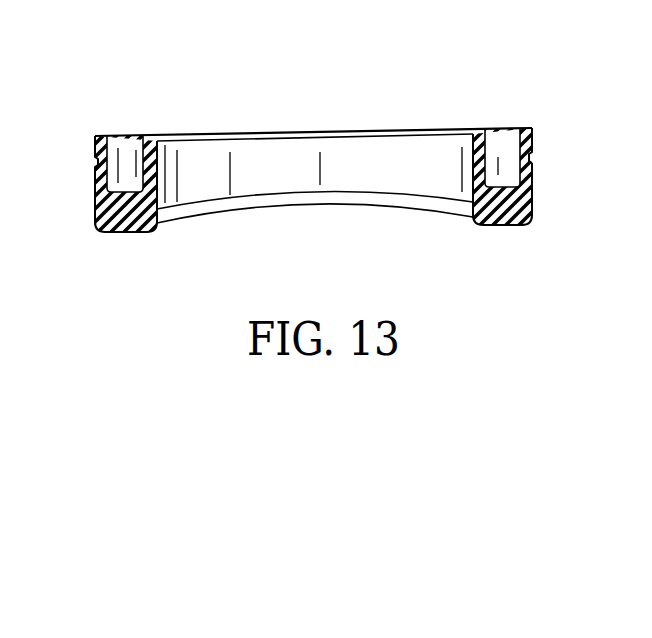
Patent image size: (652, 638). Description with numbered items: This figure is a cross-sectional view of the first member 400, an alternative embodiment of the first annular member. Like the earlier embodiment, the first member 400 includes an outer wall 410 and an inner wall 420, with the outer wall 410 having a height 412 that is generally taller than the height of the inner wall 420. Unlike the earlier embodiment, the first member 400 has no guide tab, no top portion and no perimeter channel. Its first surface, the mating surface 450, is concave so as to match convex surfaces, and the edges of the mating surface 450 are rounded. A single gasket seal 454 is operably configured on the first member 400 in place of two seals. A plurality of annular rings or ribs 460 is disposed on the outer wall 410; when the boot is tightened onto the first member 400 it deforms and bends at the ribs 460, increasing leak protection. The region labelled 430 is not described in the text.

The first member 400 is at (342, 127).
The outer wall 410 is at (530, 198).
The outer wall height 412 is at (88, 137).
The inner wall 420 is at (150, 138).
The groove 430 is at (125, 143).
The mating surface 450 is at (462, 221).
The gasket seal 454 is at (127, 232).
The ribs 460 is at (532, 145).